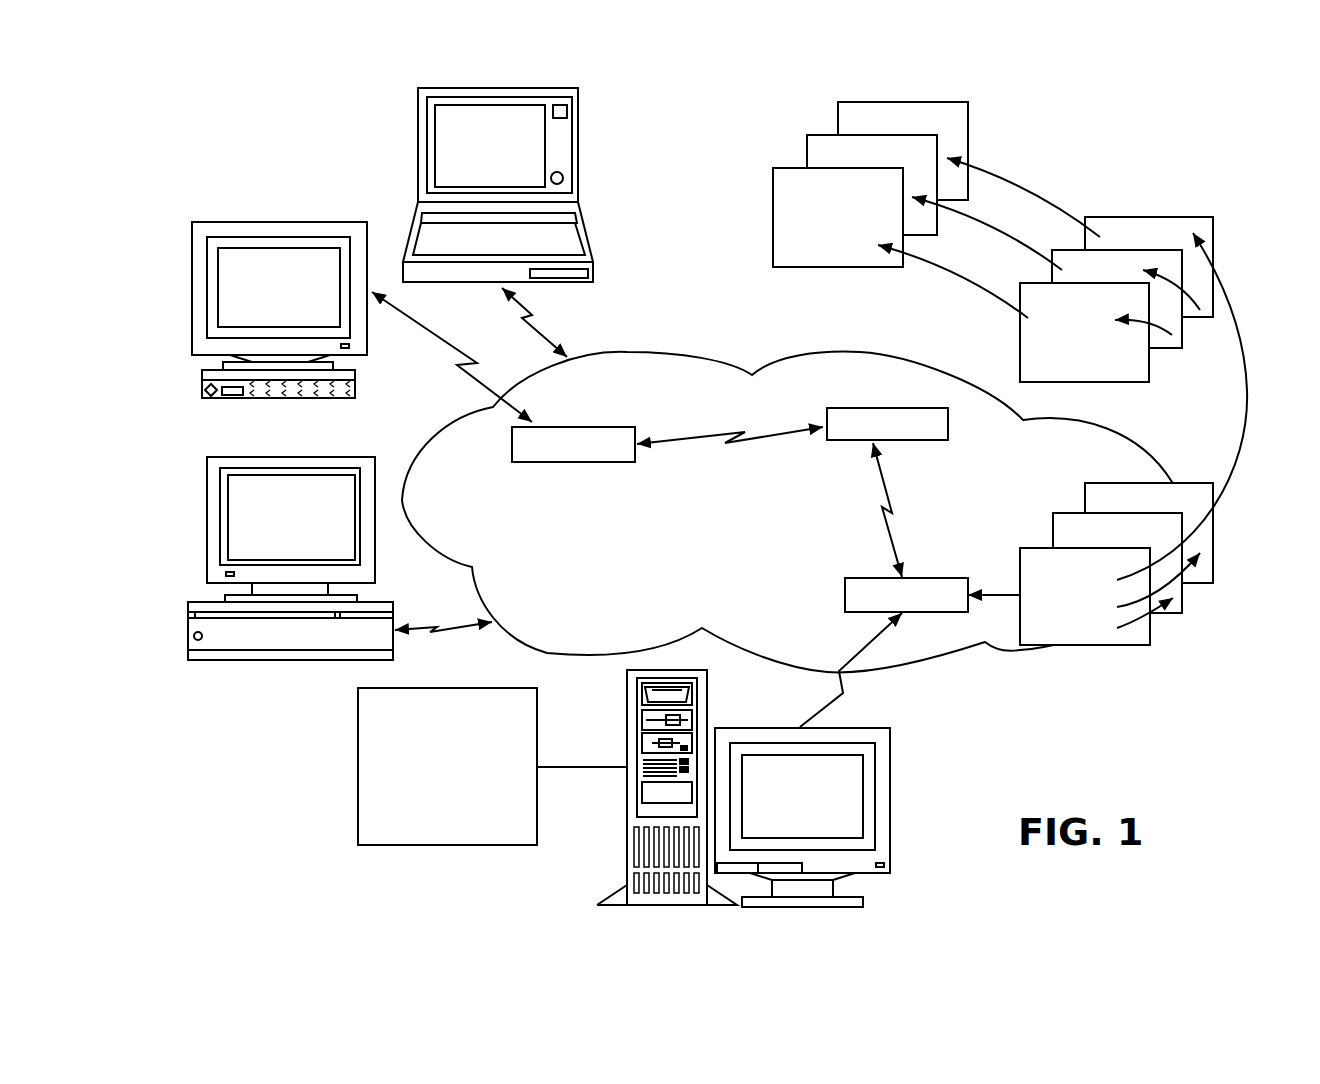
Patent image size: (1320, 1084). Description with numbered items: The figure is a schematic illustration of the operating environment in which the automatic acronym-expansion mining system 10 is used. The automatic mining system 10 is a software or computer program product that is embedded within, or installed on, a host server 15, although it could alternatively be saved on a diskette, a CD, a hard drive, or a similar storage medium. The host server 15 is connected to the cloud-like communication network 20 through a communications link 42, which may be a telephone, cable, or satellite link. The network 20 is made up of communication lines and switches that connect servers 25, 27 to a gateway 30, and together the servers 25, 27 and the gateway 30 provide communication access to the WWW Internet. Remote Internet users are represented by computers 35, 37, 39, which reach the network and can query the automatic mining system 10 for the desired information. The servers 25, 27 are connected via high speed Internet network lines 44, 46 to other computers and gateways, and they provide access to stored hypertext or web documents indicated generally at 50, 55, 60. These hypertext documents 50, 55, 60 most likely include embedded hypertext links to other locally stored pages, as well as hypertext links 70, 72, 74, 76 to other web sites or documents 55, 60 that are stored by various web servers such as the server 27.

The automatic mining system 10 is at (358, 757).
The host server 15 is at (627, 712).
The communication network 20 is at (688, 355).
The server 25 is at (885, 578).
The server 27 is at (898, 408).
The gateway 30 is at (568, 462).
The computer 35 is at (585, 235).
The computer 37 is at (338, 222).
The computer 39 is at (338, 457).
The communication link 42 is at (818, 700).
The high speed Internet network line 44 is at (897, 540).
The high speed Internet network line 46 is at (720, 433).
The hypertext documents 50 is at (1222, 553).
The hypertext documents 55 is at (1225, 243).
The hypertext documents 60 is at (790, 152).
The hypertext link 70 is at (1245, 405).
The hypertext link 72 is at (1040, 198).
The hypertext link 74 is at (1008, 237).
The hypertext link 76 is at (962, 280).